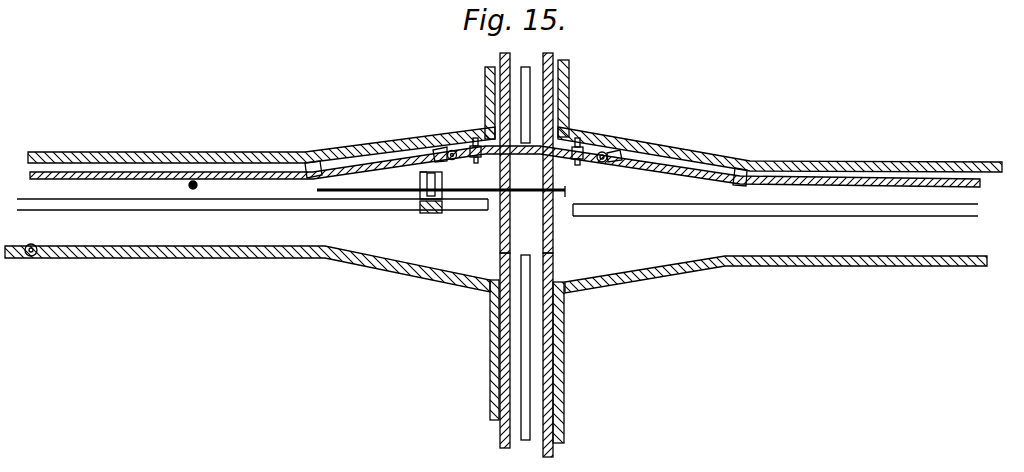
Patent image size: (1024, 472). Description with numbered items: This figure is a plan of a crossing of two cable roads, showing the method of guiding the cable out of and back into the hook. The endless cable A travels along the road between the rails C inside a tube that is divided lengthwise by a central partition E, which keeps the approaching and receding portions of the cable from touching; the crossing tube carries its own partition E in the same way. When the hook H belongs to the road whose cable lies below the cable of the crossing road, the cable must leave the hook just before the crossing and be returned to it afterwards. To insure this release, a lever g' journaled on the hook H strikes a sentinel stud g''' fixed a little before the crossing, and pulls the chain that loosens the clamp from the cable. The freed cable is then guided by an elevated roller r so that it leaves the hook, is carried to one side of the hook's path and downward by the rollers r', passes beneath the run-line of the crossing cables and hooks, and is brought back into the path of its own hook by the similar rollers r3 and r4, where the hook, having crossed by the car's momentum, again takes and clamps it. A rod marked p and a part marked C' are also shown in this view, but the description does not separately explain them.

The endless cable A is at (561, 240).
The rails C is at (370, 338).
The upper vertical pipe C' is at (526, 153).
The central partition E is at (92, 212).
The connecting rod p is at (441, 185).
The hook H is at (443, 186).
The lever g' is at (414, 179).
The sentinel stud g''' is at (178, 189).
The elevated roller r is at (305, 180).
The rollers r' is at (457, 137).
The rollers r3 is at (597, 157).
The rollers r4 is at (734, 184).